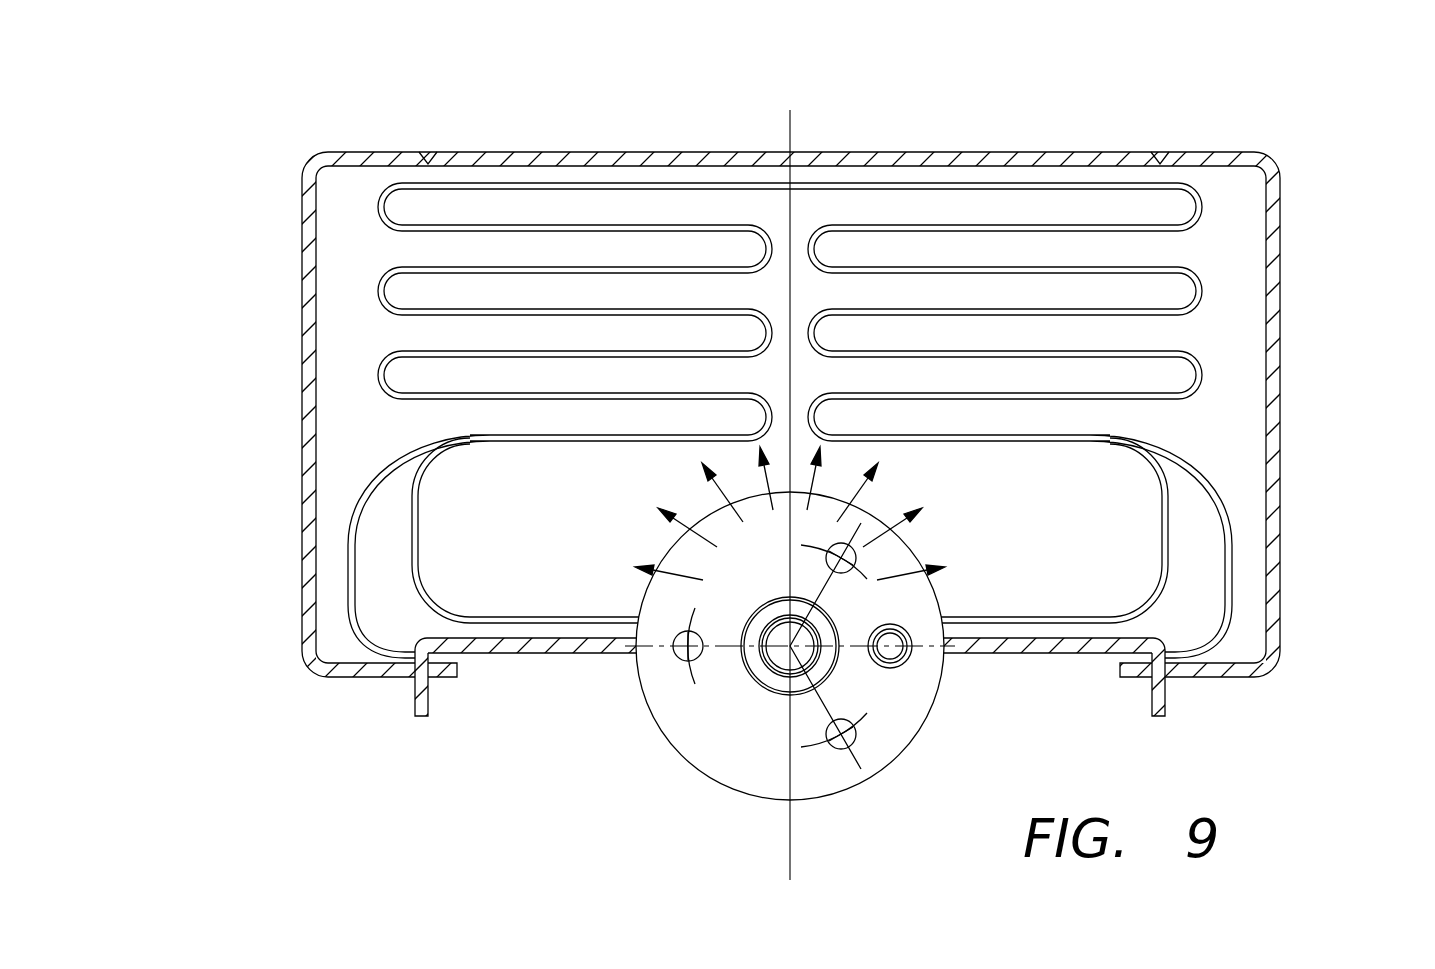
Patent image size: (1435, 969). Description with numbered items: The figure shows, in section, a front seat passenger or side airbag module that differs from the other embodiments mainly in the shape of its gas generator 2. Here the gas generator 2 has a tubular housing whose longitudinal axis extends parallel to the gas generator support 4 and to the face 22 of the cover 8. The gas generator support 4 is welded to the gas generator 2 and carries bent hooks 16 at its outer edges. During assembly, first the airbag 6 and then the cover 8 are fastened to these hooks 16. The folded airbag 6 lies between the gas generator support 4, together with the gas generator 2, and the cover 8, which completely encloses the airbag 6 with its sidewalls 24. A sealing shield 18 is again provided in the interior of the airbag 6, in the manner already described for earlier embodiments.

The gas generator 2 is at (897, 742).
The gas generator support 4 is at (617, 653).
The airbag 6 is at (501, 183).
The cover 8 is at (1272, 152).
The bent hooks 16 is at (415, 708).
The sealing shield 18 is at (1169, 515).
The face of cover 22 is at (1005, 152).
The sidewalls 24 is at (300, 522).